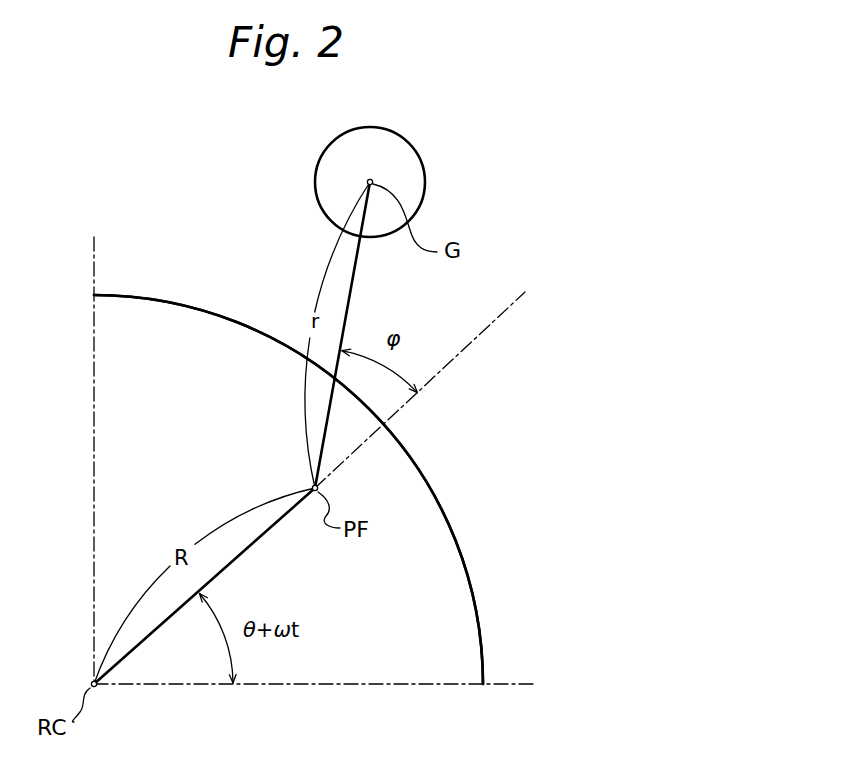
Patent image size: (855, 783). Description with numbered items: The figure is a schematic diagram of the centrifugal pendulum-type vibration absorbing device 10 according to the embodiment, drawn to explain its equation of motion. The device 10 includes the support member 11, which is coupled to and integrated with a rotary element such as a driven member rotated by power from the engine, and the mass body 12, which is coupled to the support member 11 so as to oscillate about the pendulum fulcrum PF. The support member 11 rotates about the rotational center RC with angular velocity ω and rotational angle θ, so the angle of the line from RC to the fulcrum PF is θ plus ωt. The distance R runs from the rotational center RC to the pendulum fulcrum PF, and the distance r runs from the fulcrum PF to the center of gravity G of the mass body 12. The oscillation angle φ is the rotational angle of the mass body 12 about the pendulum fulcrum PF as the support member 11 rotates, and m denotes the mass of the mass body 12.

The centrifugal pendulum-type vibration absorbing device 10 is at (263, 283).
The support member 11 is at (482, 590).
The mass body 12 is at (432, 158).